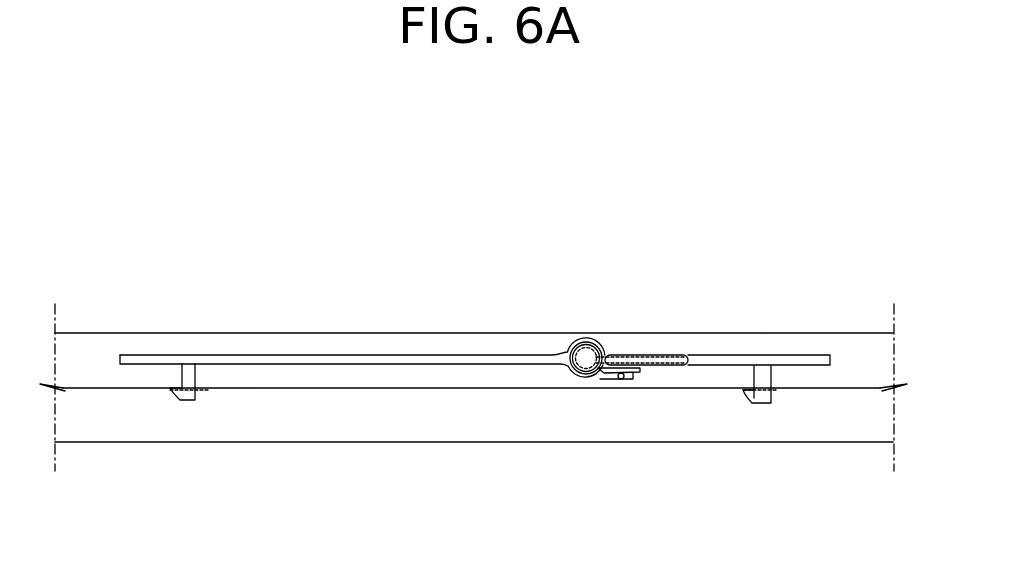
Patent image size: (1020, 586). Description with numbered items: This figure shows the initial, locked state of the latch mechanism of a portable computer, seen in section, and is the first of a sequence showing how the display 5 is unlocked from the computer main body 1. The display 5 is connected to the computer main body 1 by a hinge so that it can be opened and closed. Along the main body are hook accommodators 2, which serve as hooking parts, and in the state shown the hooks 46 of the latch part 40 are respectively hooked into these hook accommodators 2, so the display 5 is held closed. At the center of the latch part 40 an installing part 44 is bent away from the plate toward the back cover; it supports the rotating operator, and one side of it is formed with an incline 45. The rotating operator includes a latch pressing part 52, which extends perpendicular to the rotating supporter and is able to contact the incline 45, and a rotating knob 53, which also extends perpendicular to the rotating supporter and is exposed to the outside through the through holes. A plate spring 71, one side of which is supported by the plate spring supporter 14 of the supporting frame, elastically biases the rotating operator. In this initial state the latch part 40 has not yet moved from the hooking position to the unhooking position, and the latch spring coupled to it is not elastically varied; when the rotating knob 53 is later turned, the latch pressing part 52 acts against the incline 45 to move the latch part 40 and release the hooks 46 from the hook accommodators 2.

The computer main body 1 is at (845, 442).
The hook accommodators 2 is at (207, 390).
The display 5 is at (855, 333).
The plate spring supporter 14 is at (622, 380).
The latch part 40 is at (797, 357).
The installing part 44 is at (570, 342).
The incline 45 is at (647, 343).
The hooks 46 is at (183, 403).
The latch pressing part 52 is at (638, 372).
The rotating knob 53 is at (675, 345).
The plate spring 71 is at (605, 382).